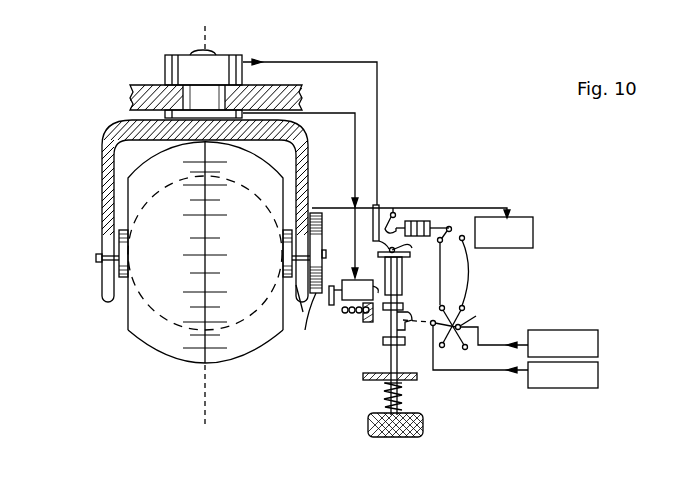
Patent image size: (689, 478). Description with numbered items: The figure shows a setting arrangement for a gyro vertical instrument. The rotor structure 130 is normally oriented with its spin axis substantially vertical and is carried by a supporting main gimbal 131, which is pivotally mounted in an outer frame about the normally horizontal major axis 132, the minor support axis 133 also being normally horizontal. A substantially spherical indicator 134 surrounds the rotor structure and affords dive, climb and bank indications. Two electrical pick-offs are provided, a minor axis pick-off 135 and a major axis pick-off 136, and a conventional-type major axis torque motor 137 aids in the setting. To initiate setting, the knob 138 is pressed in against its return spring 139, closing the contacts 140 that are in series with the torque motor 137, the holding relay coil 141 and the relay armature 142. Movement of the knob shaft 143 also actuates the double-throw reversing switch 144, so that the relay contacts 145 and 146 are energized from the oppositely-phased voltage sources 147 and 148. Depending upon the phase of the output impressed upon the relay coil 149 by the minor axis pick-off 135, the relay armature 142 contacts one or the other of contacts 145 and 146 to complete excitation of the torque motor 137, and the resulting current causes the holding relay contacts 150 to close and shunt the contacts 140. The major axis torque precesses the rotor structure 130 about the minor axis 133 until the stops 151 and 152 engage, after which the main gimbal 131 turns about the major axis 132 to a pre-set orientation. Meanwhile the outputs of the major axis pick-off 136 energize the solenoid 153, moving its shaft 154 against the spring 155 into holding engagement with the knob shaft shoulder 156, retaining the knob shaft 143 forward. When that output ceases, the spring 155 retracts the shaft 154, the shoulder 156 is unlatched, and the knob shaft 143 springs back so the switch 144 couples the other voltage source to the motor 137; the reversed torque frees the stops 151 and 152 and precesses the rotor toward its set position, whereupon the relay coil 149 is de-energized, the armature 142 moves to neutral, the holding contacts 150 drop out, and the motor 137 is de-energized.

The rotor structure 130 is at (121, 285).
The main gimbal 131 is at (104, 202).
The major axis 132 is at (204, 230).
The minor axis 133 is at (94, 258).
The spherical indicator 134 is at (258, 318).
The minor axis pick-off 135 is at (309, 312).
The major axis pick-off 136 is at (162, 115).
The major axis torque motor 137 is at (224, 62).
The knob 138 is at (410, 434).
The return spring 139 is at (402, 395).
The contacts 140 is at (407, 333).
The holding relay coil 141 is at (424, 220).
The relay armature 142 is at (496, 204).
The knob shaft 143 is at (388, 366).
The double-throw reversing switch 144 is at (485, 316).
The relay contact 145 is at (464, 250).
The relay contact 146 is at (466, 280).
The voltage source 147 is at (585, 332).
The voltage source 148 is at (598, 376).
The relay coil 149 is at (535, 235).
The holding relay contacts 150 is at (393, 212).
The stop 151 is at (303, 212).
The stop 152 is at (296, 252).
The solenoid 153 is at (361, 279).
The solenoid shaft 154 is at (384, 341).
The spring 155 is at (348, 316).
The knob shaft shoulder 156 is at (402, 286).